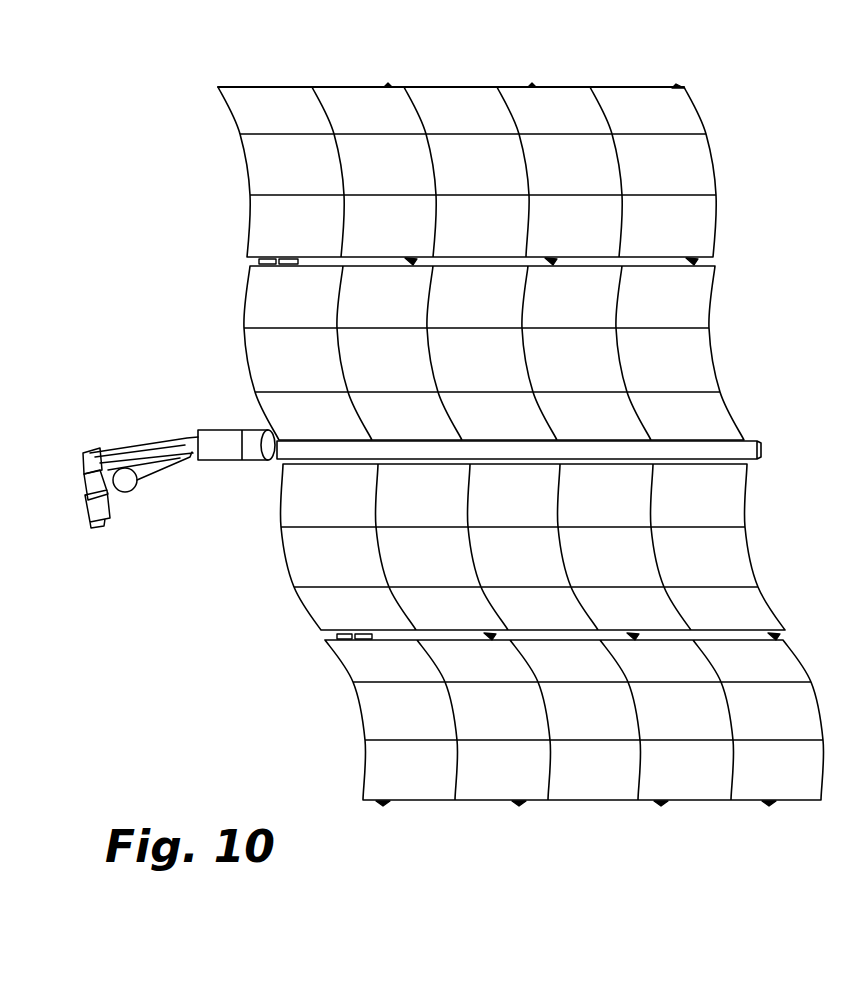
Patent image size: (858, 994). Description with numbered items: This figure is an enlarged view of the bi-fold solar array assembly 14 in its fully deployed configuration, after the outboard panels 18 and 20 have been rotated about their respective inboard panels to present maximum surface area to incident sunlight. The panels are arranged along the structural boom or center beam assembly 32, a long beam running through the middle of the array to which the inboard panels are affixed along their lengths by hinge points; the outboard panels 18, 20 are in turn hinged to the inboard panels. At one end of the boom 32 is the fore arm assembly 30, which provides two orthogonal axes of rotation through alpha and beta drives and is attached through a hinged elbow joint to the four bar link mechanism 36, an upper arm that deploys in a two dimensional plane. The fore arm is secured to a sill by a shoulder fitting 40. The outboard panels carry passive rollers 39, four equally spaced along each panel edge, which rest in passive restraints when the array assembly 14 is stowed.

The bi-fold solar array assembly 14 is at (347, 99).
The outboard solar array panel 18 is at (476, 87).
The outboard solar array panel 20 is at (247, 292).
The fore arm assembly 30 is at (226, 461).
The boom 32 is at (761, 447).
The four bar link mechanism 36 is at (146, 440).
The passive rollers 39 is at (681, 88).
The shoulder fitting 40 is at (113, 494).